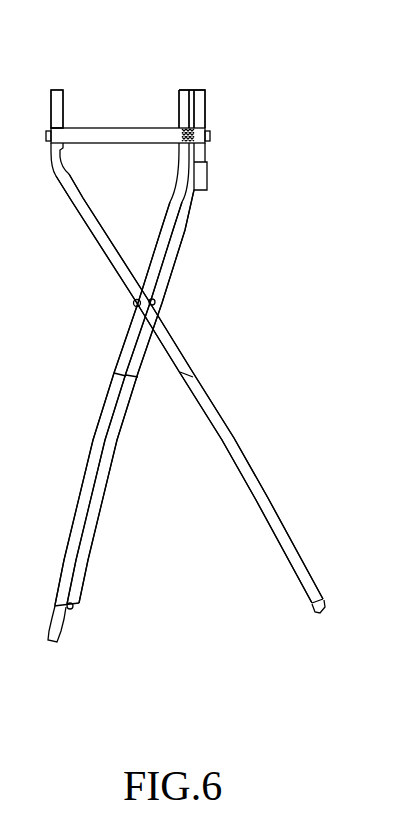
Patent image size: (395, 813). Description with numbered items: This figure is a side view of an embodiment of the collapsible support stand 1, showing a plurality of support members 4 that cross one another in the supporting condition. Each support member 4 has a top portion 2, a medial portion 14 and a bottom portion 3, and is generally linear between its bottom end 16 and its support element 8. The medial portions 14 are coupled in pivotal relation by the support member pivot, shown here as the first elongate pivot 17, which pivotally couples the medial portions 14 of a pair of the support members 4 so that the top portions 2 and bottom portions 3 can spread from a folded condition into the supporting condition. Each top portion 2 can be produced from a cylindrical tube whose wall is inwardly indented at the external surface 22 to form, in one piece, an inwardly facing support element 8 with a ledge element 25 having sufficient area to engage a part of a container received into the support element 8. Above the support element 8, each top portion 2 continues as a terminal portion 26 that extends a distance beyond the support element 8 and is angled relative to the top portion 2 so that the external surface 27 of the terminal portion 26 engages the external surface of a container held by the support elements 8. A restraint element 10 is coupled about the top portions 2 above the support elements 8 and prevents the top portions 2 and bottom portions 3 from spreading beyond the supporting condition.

The collapsible support stand 1 is at (248, 39).
The top portion 2 is at (182, 233).
The external surface 22 is at (189, 388).
The bottom portion 3 is at (76, 534).
The support member 4 is at (72, 480).
The support element 8 is at (58, 176).
The restraint element 10 is at (120, 136).
The medial portion 14 is at (180, 345).
The bottom end 16 is at (52, 628).
The first elongate pivot element 17 is at (134, 304).
The ledge element 25 is at (200, 186).
The terminal portion 26 is at (58, 107).
The external surface of terminal portion 27 is at (128, 109).